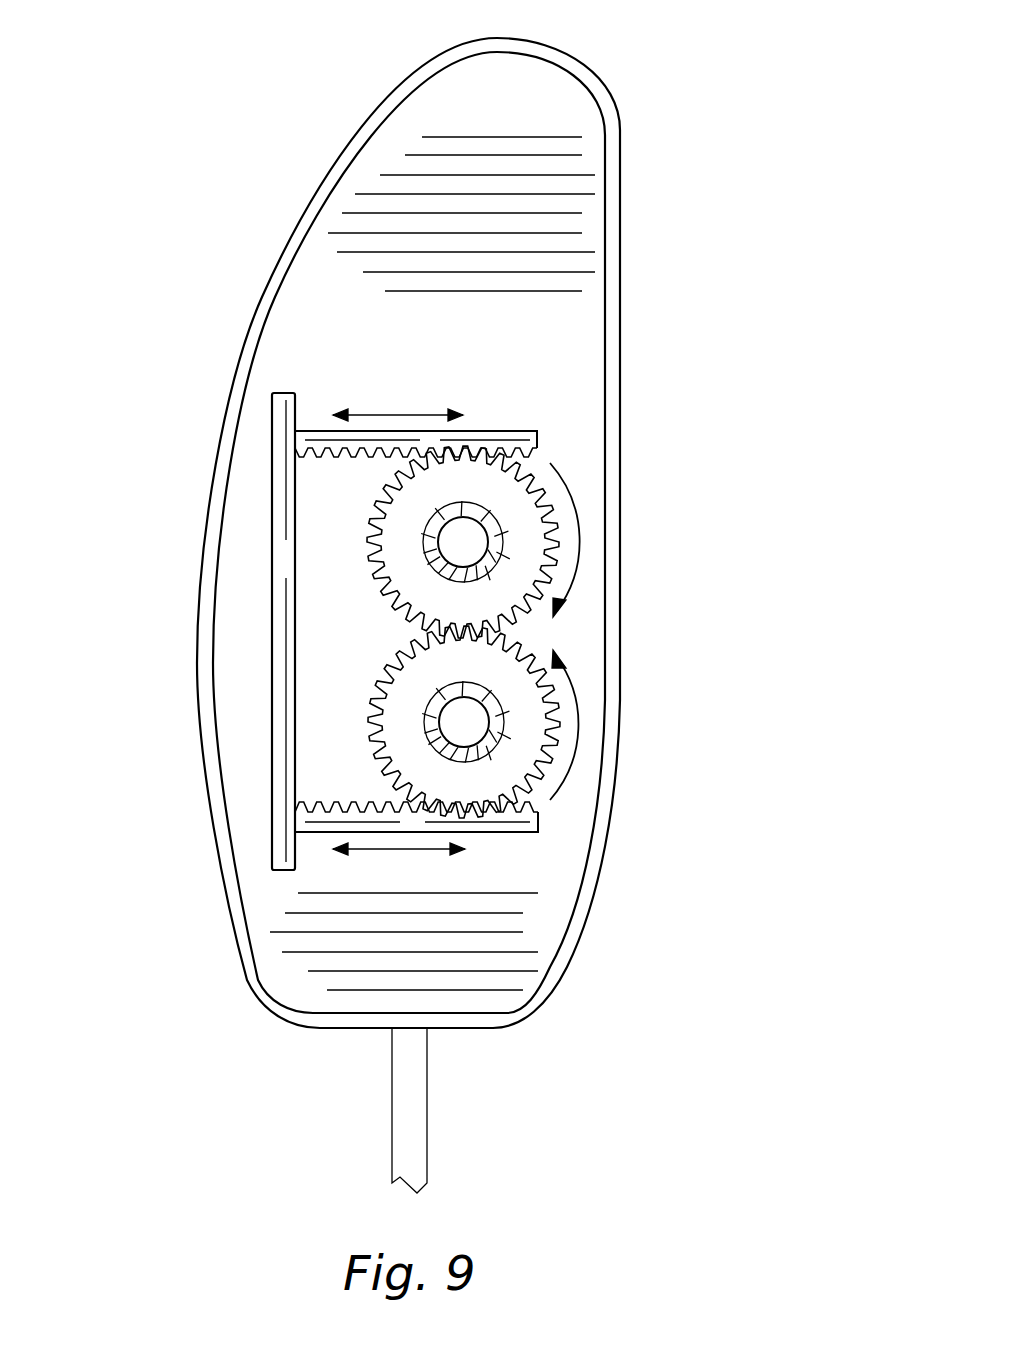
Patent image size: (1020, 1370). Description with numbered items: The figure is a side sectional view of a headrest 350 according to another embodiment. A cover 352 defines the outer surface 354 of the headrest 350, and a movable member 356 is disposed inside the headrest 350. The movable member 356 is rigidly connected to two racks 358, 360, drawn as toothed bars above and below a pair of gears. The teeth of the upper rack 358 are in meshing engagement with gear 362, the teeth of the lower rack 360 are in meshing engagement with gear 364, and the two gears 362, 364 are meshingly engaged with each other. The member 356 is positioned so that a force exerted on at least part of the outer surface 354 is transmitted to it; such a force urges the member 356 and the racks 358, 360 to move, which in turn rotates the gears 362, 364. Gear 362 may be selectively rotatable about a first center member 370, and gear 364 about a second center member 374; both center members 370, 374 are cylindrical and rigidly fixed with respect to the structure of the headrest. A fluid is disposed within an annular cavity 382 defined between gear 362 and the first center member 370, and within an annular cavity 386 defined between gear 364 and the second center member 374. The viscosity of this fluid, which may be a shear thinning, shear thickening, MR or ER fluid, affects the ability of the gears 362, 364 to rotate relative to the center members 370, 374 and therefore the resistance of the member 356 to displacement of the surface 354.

The headrest 350 is at (692, 65).
The cover 352 is at (263, 300).
The outer surface 354 is at (199, 661).
The movable member 356 is at (280, 777).
The rack 358 is at (473, 443).
The rack 360 is at (530, 818).
The gear 362 is at (493, 478).
The gear 364 is at (485, 797).
The first center member 370 is at (457, 545).
The second center member 374 is at (457, 723).
The annular cavity 382 is at (433, 525).
The annular cavity 386 is at (433, 752).